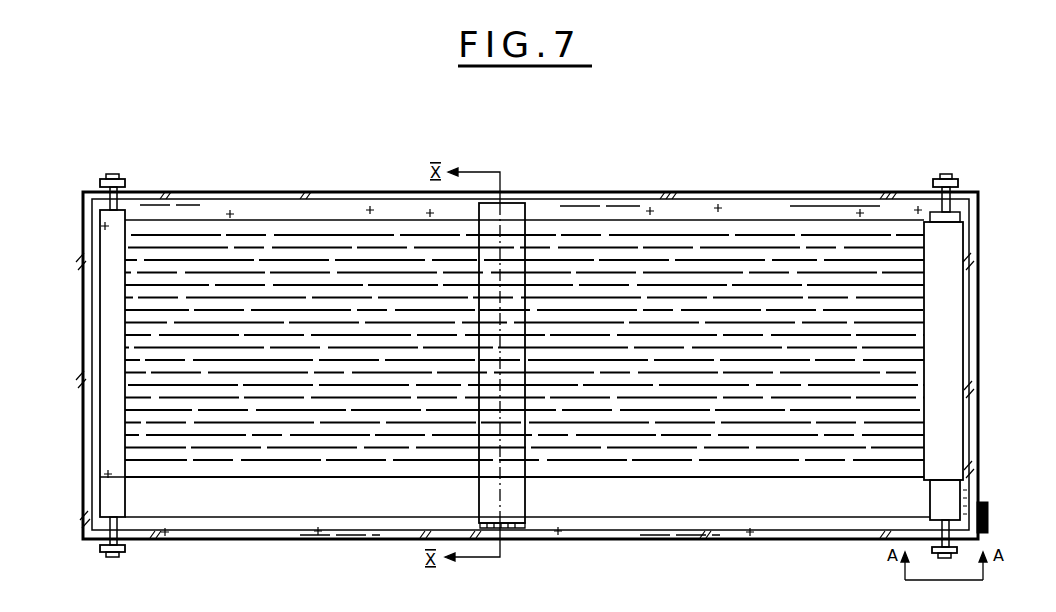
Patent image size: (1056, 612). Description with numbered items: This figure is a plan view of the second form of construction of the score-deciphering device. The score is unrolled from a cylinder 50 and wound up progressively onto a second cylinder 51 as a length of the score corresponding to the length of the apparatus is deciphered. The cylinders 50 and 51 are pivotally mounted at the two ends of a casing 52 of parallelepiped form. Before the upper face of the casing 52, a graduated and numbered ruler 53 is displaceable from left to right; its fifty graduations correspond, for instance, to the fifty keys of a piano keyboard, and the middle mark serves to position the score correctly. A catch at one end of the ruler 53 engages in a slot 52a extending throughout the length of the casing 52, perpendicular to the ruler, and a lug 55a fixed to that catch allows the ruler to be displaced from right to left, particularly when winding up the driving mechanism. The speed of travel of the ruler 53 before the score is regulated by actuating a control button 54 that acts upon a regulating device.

The cylinder 50 is at (950, 493).
The second cylinder 51 is at (108, 213).
The casing 52 is at (693, 193).
The slot 52a is at (591, 528).
The graduated and numbered ruler 53 is at (515, 238).
The control button 54 is at (988, 505).
The lug 55a is at (515, 528).